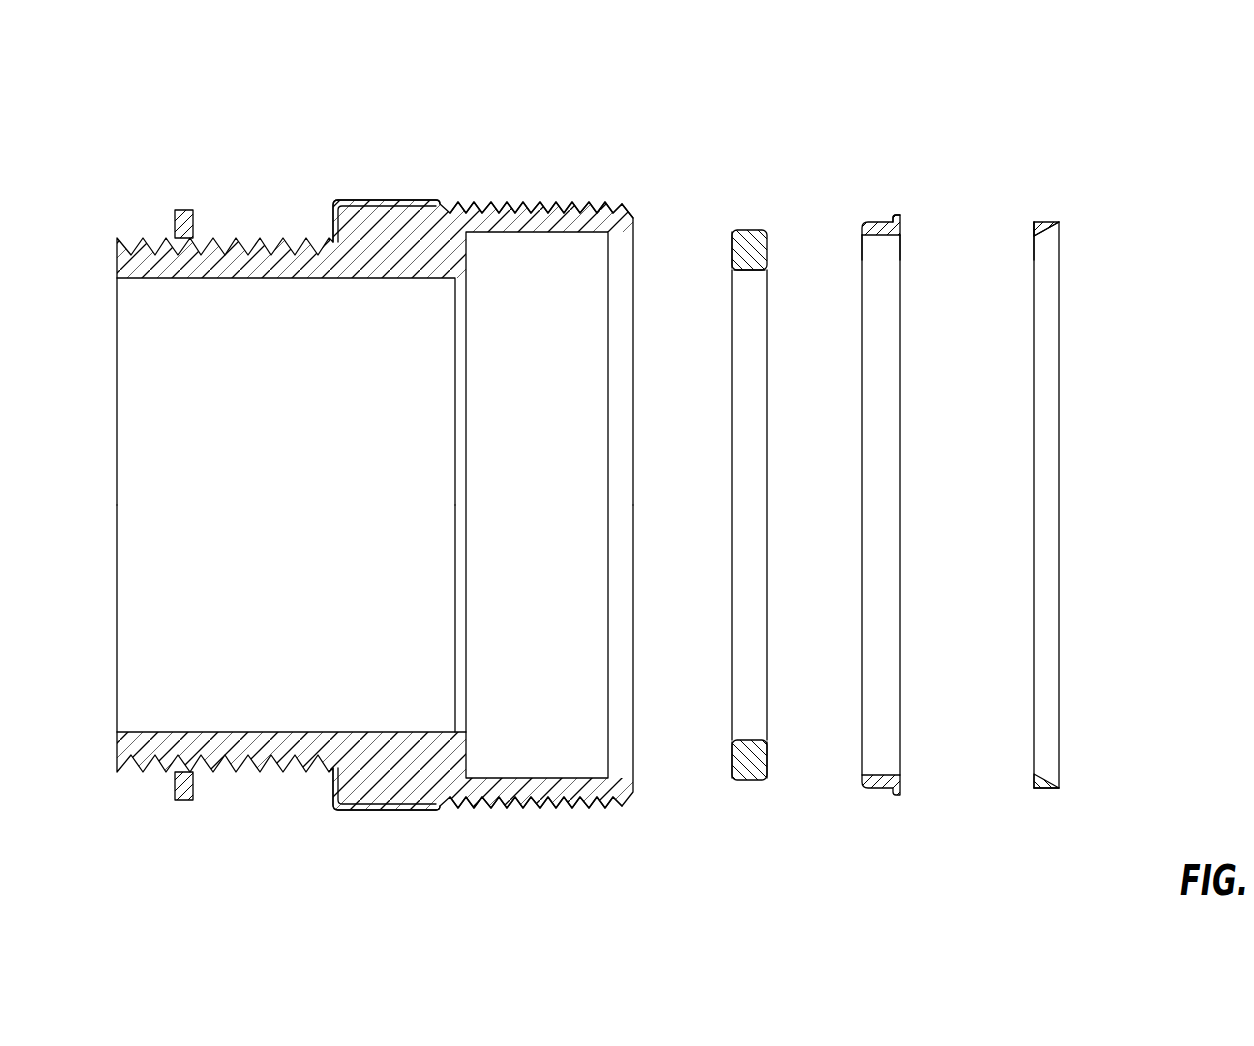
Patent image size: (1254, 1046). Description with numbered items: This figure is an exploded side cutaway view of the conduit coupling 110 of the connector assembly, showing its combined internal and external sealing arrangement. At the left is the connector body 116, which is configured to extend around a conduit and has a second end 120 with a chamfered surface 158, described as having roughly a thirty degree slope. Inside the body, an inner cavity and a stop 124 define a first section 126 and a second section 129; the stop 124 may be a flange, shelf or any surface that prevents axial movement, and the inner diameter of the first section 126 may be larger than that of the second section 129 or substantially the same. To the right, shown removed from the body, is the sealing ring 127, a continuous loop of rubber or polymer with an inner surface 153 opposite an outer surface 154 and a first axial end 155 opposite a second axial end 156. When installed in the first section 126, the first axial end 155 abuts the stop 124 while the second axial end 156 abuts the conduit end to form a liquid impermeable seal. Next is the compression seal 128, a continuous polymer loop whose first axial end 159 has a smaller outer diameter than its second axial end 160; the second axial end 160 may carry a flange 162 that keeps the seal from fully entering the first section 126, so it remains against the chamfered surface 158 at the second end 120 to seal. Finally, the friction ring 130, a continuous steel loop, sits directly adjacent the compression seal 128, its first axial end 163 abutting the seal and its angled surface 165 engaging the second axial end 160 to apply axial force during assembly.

The conduit coupling 110 is at (622, 463).
The connector body 116 is at (398, 177).
The second end 120 is at (627, 812).
The stop 124 is at (466, 752).
The first section 126 is at (535, 271).
The sealing ring 127 is at (751, 522).
The compression seal 128 is at (898, 515).
The second section 129 is at (262, 321).
The friction ring 130 is at (1055, 529).
The inner surface 153 is at (760, 270).
The outer surface 154 is at (748, 229).
The first axial end 155 is at (733, 758).
The second axial end 156 is at (767, 760).
The chamfered surface 158 is at (634, 232).
The first axial end 159 is at (862, 242).
The second axial end 160 is at (900, 240).
The flange 162 is at (895, 217).
The first axial end 163 is at (1033, 250).
The angled surface 165 is at (1043, 791).